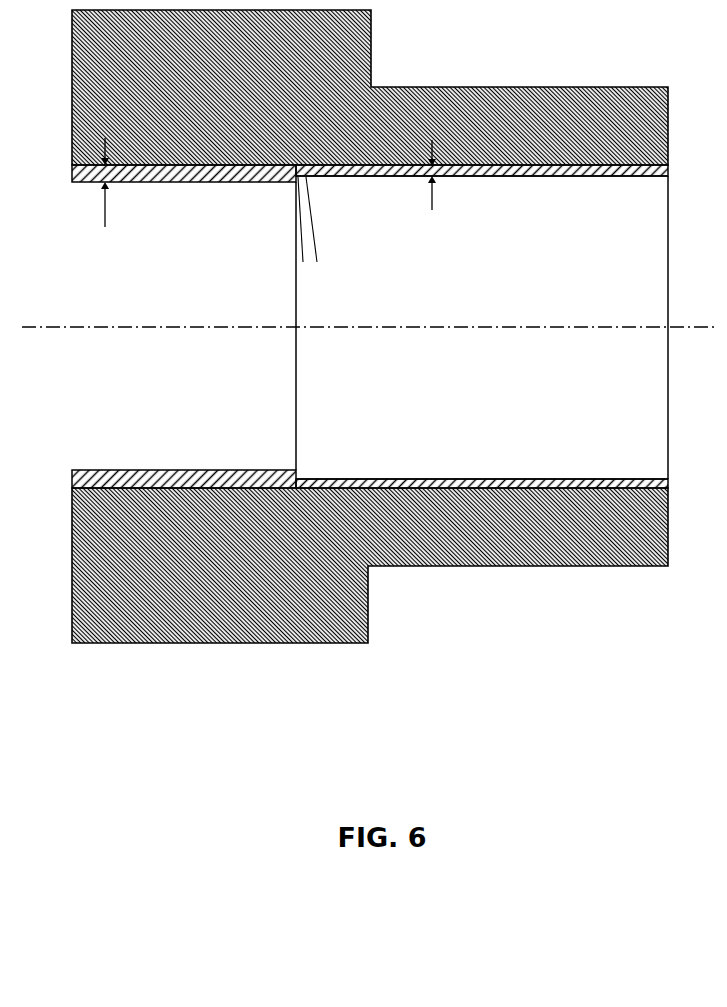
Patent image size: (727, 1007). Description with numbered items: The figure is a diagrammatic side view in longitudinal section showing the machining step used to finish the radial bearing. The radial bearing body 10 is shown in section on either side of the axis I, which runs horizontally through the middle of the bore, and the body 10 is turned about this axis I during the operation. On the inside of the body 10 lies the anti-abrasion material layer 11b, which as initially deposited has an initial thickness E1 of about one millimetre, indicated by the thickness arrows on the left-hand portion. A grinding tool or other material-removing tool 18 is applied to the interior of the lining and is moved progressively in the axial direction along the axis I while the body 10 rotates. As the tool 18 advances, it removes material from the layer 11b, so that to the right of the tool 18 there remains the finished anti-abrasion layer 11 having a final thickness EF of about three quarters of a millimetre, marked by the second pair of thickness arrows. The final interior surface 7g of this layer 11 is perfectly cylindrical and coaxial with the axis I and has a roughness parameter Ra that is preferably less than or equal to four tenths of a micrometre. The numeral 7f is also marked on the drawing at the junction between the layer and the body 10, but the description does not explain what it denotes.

The outer tube wall (upper body) 7f is at (545, 166).
The final interior surface 7g is at (503, 177).
The radial bearing body 10 is at (532, 548).
The anti-abrasion layer 11 is at (595, 177).
The anti-abrasion material layer 11b is at (203, 183).
The tool 18 is at (310, 237).
The initial thickness E1 is at (105, 192).
The final thickness EF is at (434, 189).
The axis I is at (369, 328).